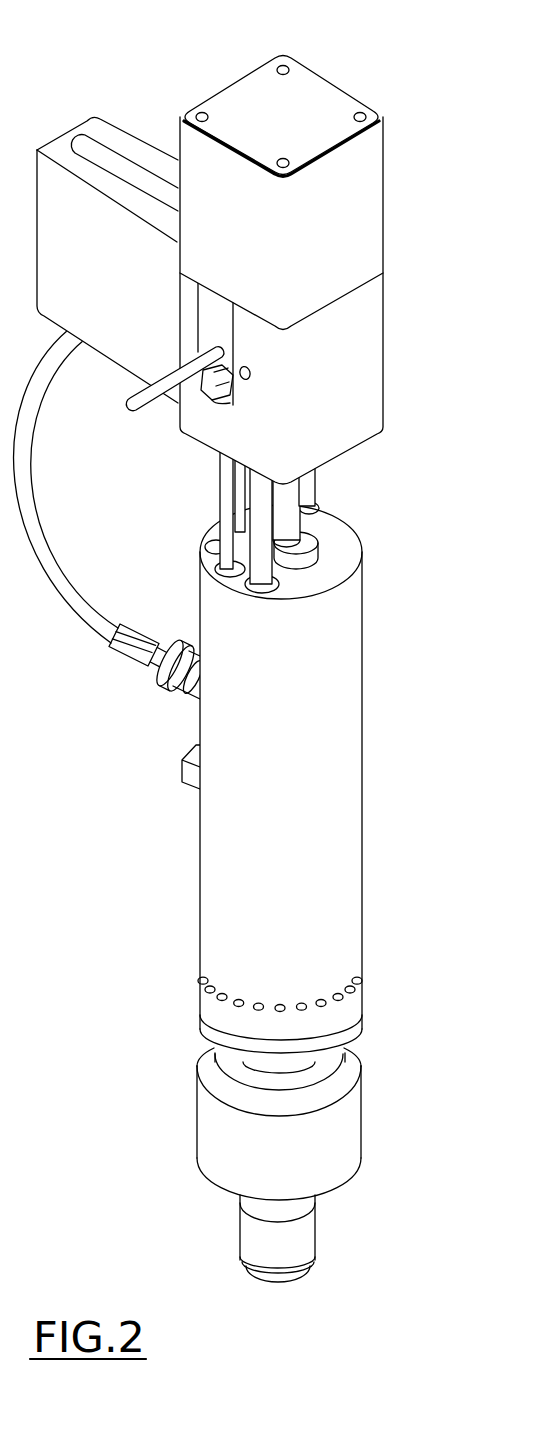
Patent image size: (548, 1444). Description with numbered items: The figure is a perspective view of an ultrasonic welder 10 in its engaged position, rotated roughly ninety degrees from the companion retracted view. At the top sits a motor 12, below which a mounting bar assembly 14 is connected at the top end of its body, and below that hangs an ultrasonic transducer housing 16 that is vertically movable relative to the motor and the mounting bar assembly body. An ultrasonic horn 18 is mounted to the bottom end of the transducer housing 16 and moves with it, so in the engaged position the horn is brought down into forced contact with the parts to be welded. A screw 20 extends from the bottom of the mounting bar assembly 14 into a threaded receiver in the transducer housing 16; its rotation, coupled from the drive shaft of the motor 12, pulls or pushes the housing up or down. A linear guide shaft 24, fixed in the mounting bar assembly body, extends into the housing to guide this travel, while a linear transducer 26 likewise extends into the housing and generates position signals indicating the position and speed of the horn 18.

The ultrasonic welder 10 is at (222, 647).
The motor 12 is at (358, 207).
The mounting bar assembly 14 is at (363, 360).
The ultrasonic transducer housing 16 is at (333, 780).
The ultrasonic horn 18 is at (197, 1138).
The screw 20 is at (291, 509).
The linear guide shaft 24 is at (308, 486).
The linear transducer 26 is at (221, 500).